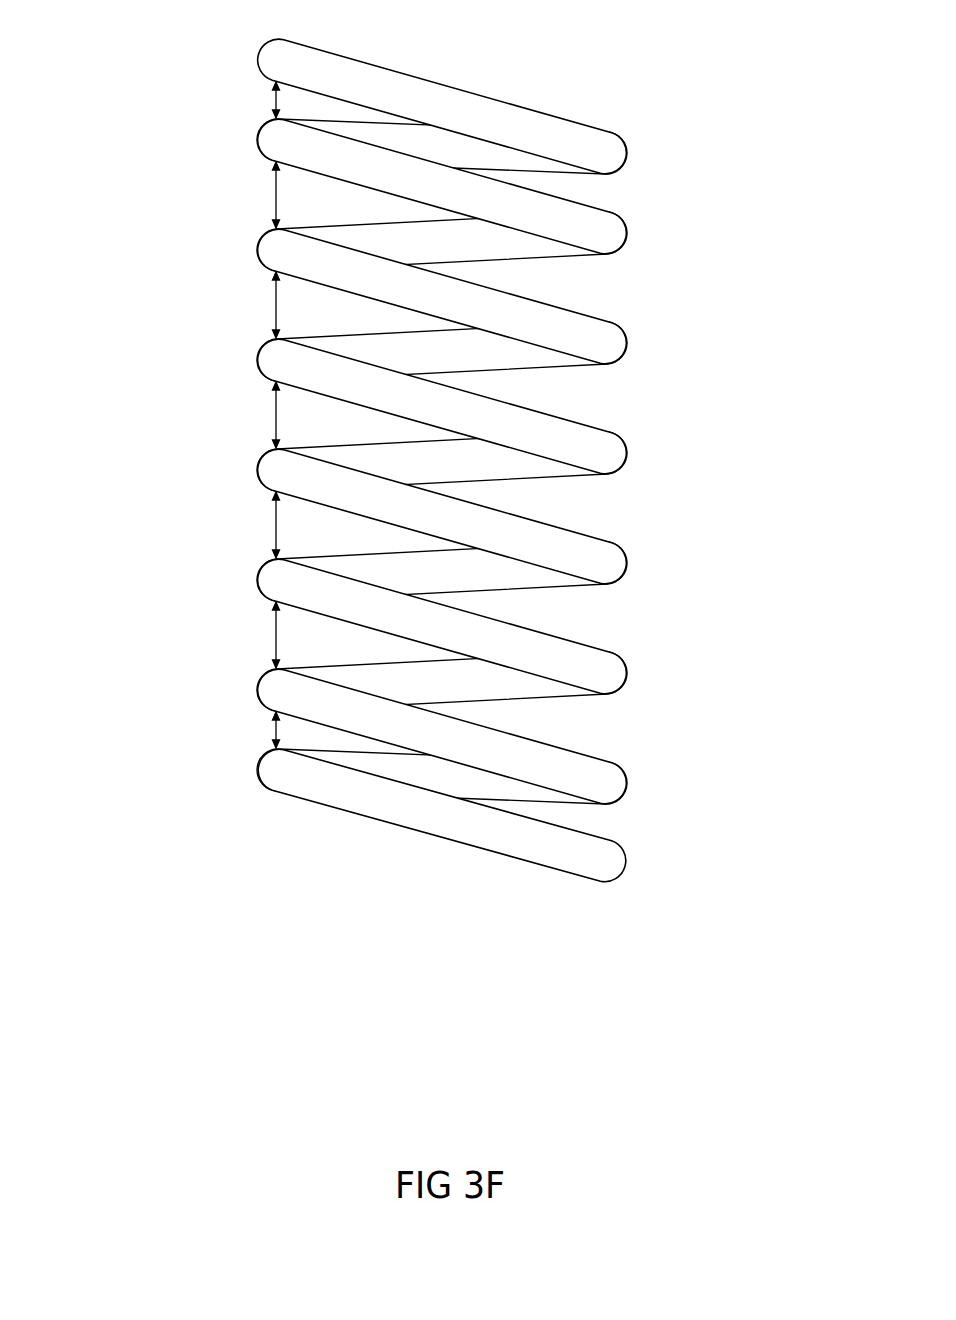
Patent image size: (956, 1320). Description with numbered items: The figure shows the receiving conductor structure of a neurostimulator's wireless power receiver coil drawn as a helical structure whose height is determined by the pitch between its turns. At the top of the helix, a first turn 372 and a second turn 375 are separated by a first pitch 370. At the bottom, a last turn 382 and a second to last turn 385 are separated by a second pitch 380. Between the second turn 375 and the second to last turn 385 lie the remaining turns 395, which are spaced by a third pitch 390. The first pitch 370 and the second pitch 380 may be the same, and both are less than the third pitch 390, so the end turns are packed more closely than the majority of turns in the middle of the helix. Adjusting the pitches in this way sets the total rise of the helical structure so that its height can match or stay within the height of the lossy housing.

The first pitch 370 is at (274, 99).
The first turn 372 is at (612, 153).
The second turn 375 is at (612, 233).
The third pitch 390 is at (273, 292).
The remaining turns 395 is at (612, 673).
The second pitch 380 is at (274, 733).
The last turn 382 is at (612, 782).
The second to last turn 385 is at (612, 860).